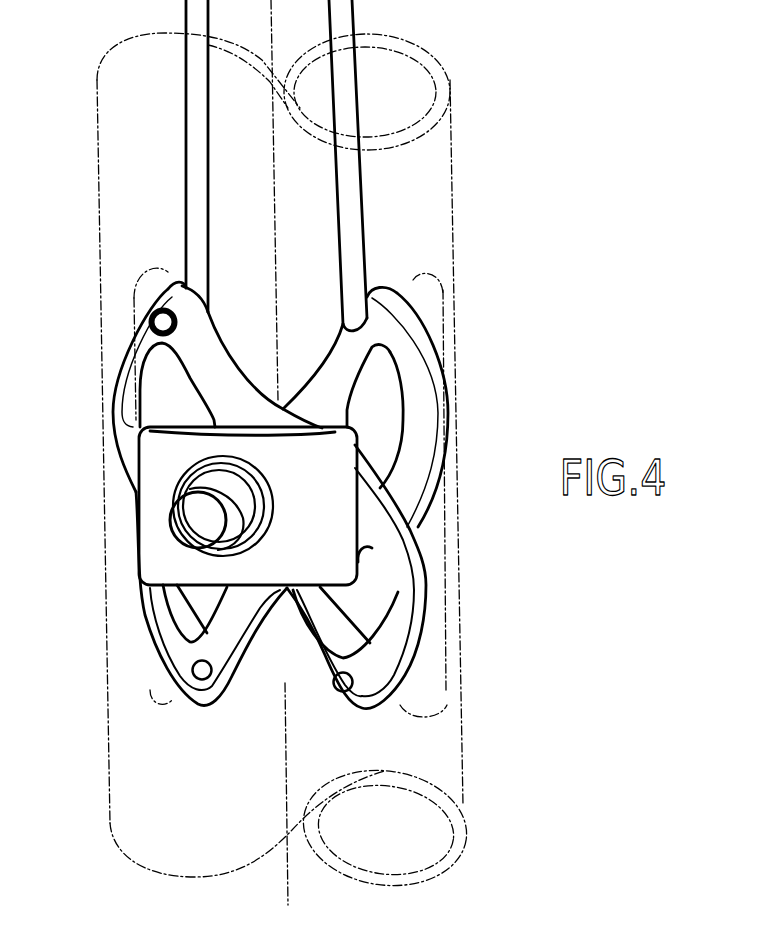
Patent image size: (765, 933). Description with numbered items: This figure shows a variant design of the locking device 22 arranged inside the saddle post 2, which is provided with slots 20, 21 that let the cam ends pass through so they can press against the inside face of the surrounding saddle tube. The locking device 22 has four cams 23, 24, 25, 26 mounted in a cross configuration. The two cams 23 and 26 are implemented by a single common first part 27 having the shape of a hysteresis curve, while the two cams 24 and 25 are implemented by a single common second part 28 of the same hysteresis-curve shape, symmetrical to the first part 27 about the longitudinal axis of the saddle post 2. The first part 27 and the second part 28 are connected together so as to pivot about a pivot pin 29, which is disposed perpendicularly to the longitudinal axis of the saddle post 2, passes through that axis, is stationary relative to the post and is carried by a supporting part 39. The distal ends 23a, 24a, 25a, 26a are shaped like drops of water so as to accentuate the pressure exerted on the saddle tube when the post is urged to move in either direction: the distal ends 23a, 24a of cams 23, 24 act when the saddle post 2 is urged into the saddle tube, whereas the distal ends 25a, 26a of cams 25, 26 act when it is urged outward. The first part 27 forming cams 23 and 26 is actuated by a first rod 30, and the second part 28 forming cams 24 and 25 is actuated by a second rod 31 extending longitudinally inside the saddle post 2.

The saddle post 2 is at (450, 190).
The slot 20 is at (178, 389).
The slot 21 is at (411, 401).
The locking device 22 is at (450, 452).
The cam 23 is at (164, 600).
The distal end 23a is at (153, 643).
The cam 24 is at (404, 577).
The distal end 24a is at (425, 632).
The cam 25 is at (120, 410).
The distal end 25a is at (127, 360).
The cam 26 is at (413, 373).
The distal end 26a is at (445, 403).
The first part 27 is at (112, 464).
The second part 28 is at (155, 657).
The pivot pin 29 is at (200, 520).
The first rod 30 is at (354, 206).
The second rod 31 is at (200, 133).
The supporting part 39 is at (199, 552).